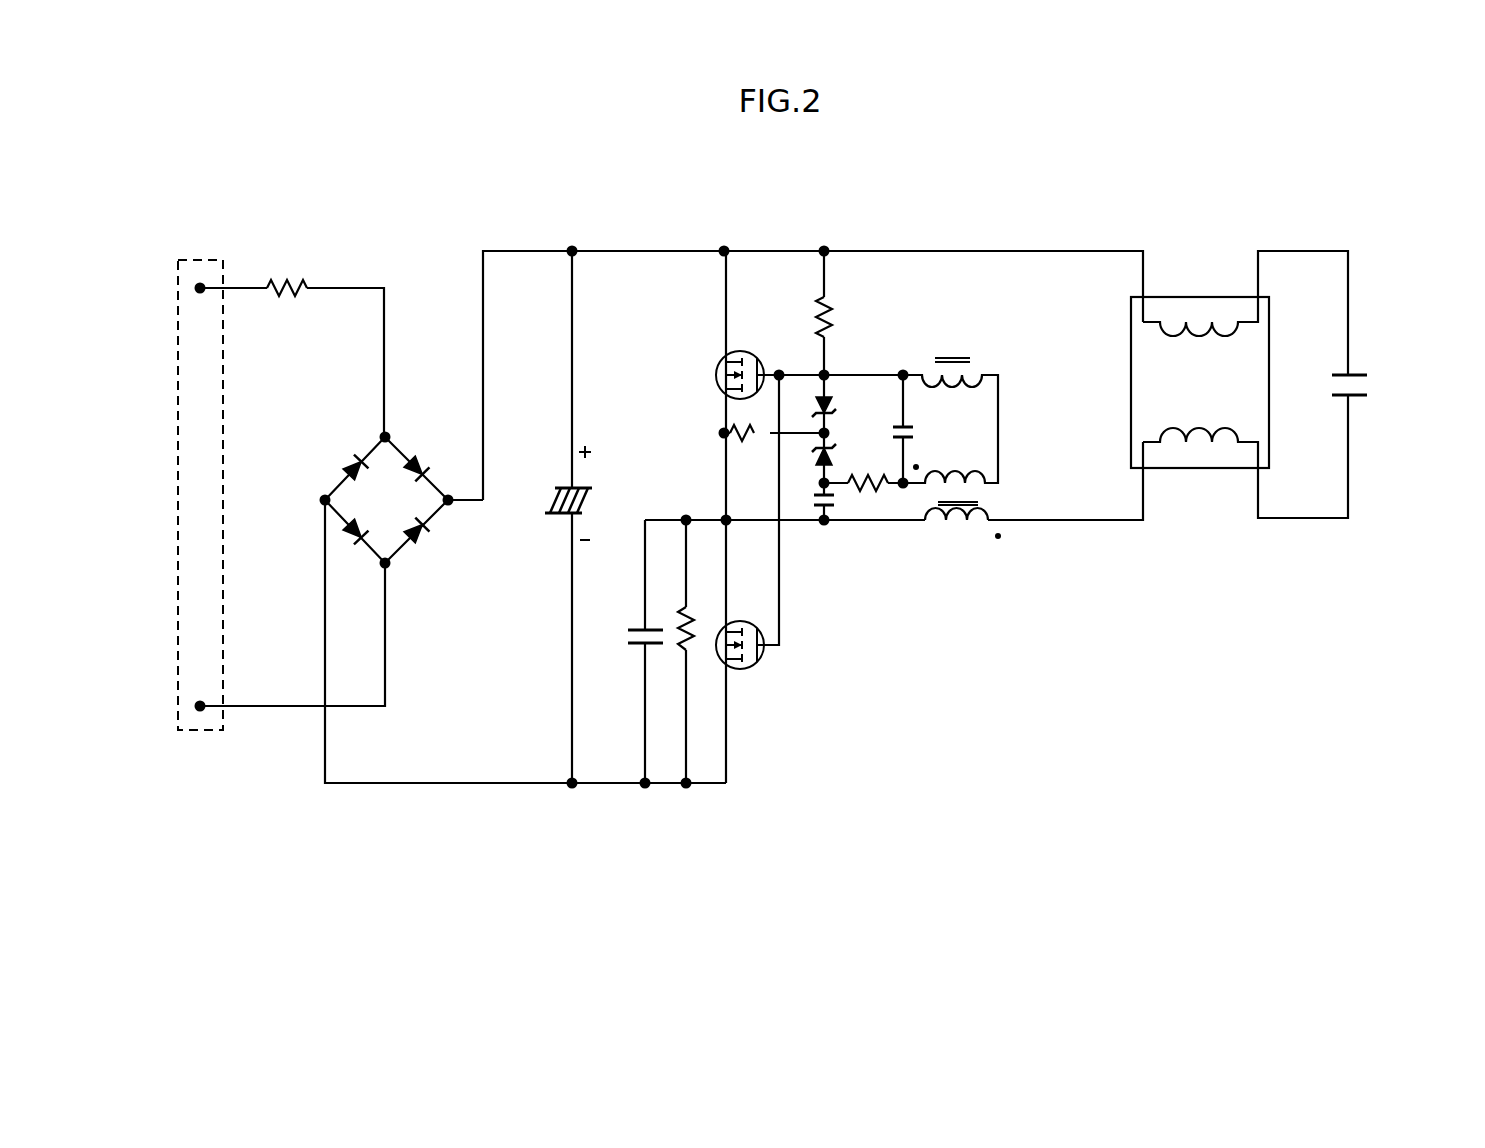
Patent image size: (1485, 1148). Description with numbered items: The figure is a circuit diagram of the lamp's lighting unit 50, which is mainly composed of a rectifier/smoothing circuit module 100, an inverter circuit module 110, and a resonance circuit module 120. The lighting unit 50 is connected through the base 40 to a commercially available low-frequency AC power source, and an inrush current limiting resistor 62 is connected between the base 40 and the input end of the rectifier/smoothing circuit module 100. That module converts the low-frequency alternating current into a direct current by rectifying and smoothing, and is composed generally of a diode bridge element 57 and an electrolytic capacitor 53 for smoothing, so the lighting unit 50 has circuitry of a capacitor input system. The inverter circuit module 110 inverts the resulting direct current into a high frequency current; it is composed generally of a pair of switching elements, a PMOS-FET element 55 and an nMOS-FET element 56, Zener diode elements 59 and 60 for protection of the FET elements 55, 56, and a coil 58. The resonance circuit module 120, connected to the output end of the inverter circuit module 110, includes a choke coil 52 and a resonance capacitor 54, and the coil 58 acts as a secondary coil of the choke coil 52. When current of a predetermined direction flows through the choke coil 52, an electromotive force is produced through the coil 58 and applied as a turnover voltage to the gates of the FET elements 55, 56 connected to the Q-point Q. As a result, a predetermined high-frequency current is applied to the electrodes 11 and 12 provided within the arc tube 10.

The base 40 is at (176, 262).
The inrush current limiting resistor 62 is at (307, 275).
The diode bridge element 57 is at (436, 550).
The electrolytic capacitor 53 is at (602, 493).
The nMOS-FET element 56 is at (712, 364).
The Q-point Q is at (781, 370).
The Zener diode element 59 is at (833, 397).
The Zener diode element 60 is at (820, 460).
The PMOS-FET element 55 is at (778, 664).
The coil 58 is at (986, 354).
The choke coil 52 is at (942, 528).
The arc tube 10 is at (1268, 362).
The electrode 11 is at (1222, 318).
The electrode 12 is at (1222, 445).
The resonance capacitor 54 is at (1370, 383).
The lighting unit 50 is at (1176, 737).
The rectifier/smoothing circuit module 100 is at (325, 817).
The inverter circuit module 110 is at (737, 817).
The resonance circuit module 120 is at (1345, 548).